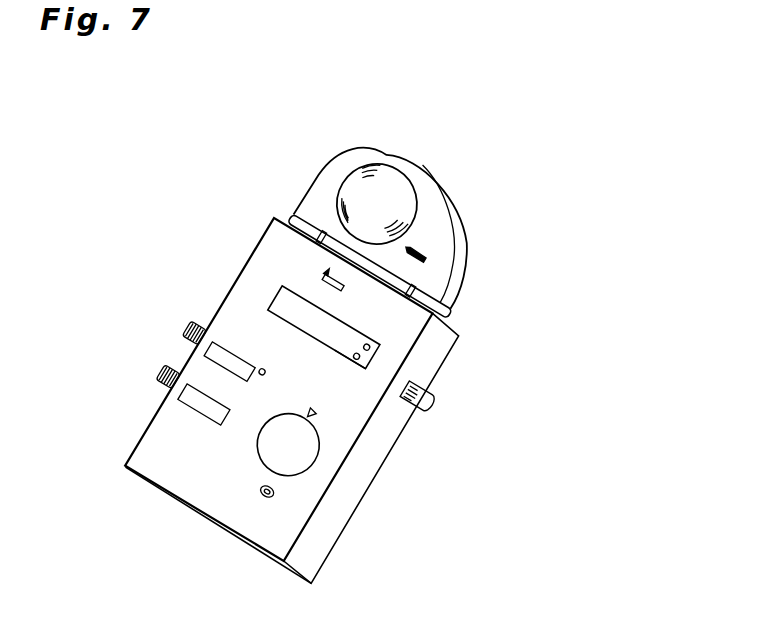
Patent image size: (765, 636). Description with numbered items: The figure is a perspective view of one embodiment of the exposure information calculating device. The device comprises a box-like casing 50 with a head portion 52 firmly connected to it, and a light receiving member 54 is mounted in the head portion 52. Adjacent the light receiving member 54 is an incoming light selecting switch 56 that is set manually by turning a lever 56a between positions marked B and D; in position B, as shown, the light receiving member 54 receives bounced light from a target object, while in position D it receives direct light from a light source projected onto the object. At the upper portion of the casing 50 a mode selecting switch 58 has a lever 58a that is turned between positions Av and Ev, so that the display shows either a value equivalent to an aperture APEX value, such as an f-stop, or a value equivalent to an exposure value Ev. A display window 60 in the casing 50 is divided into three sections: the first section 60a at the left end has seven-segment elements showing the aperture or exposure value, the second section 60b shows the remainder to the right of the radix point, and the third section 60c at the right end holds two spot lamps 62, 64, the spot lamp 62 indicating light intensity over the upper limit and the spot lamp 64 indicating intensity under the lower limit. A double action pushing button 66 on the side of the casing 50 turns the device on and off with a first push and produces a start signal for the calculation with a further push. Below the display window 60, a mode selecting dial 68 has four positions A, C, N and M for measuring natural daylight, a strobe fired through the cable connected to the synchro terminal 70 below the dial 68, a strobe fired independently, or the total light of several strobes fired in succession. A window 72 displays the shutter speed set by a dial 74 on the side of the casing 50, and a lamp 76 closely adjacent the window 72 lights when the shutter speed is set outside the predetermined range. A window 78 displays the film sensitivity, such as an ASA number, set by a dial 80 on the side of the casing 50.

The casing 50 is at (262, 257).
The head portion 52 is at (320, 193).
The light receiving member 54 is at (405, 177).
The incoming light selecting switch 56 is at (428, 259).
The lever 56a is at (412, 249).
The mode selecting switch 58 is at (345, 288).
The lever 58a is at (323, 281).
The display window 60 is at (268, 300).
The first section 60a is at (285, 325).
The second section 60b is at (331, 351).
The third section 60c is at (348, 364).
The spot lamp 62 is at (370, 348).
The spot lamp 64 is at (361, 361).
The double action pushing button 66 is at (432, 402).
The mode selecting dial 68 is at (320, 434).
The synchro terminal 70 is at (274, 493).
The window 72 is at (214, 359).
The dial 74 is at (184, 330).
The lamp 76 is at (261, 376).
The window 78 is at (200, 422).
The dial 80 is at (160, 380).